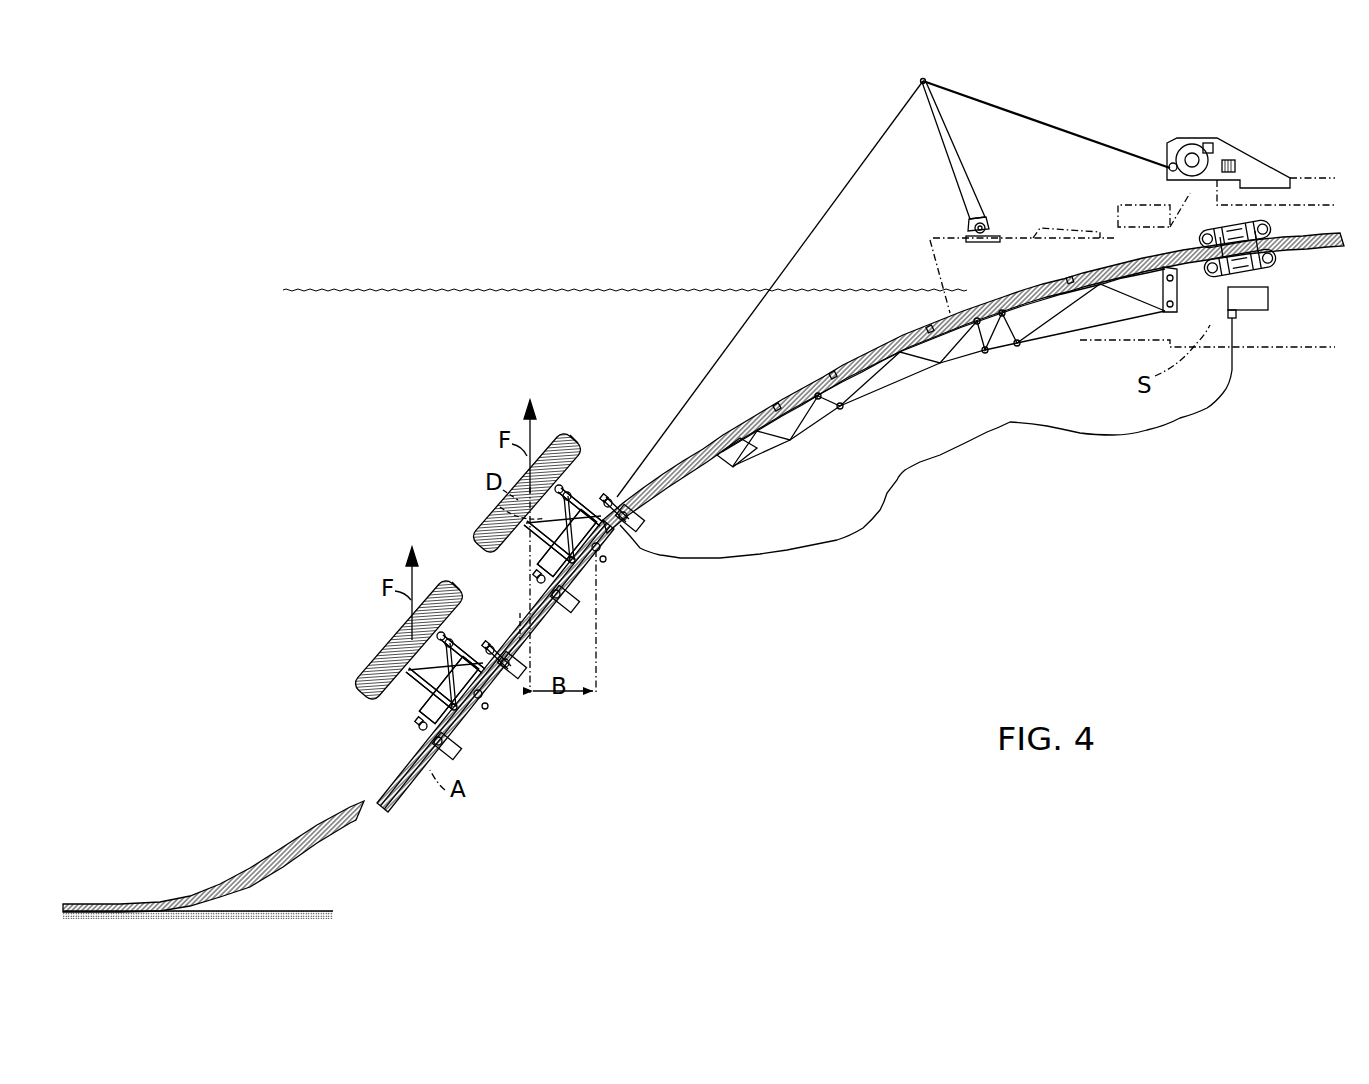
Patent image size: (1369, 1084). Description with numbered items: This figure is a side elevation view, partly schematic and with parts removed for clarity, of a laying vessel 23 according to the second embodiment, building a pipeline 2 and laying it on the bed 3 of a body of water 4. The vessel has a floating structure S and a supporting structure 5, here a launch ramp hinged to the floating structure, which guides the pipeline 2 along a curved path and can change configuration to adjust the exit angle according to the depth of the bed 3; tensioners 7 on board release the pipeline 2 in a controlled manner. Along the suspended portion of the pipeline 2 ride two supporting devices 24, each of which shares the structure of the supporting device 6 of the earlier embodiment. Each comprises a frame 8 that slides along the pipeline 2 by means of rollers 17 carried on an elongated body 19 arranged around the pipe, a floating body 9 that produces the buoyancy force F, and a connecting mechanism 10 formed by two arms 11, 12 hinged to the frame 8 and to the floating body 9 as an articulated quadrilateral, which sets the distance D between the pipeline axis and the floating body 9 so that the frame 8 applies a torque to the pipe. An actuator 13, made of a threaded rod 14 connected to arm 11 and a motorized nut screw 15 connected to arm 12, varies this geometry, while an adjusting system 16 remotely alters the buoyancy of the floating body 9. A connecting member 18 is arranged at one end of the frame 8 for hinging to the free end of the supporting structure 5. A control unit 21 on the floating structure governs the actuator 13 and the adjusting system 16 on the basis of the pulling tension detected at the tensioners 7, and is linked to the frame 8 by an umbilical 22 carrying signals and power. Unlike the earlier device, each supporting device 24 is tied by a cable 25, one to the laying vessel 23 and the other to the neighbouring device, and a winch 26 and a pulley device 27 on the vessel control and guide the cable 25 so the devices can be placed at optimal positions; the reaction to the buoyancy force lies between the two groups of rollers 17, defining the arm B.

The pipeline 2 is at (298, 851).
The bed 3 is at (300, 911).
The body of water 4 is at (636, 308).
The supporting structure 5 is at (1001, 362).
The supporting device 6 is at (468, 612).
The tensioners 7 is at (1288, 222).
The frame 8 is at (432, 707).
The floating body 9 is at (377, 668).
The connecting mechanism 10 is at (412, 714).
The arm 11 is at (408, 677).
The arm 12 is at (477, 695).
The actuator 13 is at (487, 622).
The threaded rod 14 is at (448, 676).
The motorized nut screw 15 is at (446, 639).
The adjusting system 16 is at (458, 586).
The rollers 17 is at (490, 660).
The connecting member 18 is at (498, 640).
The elongated body 19 is at (481, 702).
The control unit 21 is at (1273, 297).
The umbilical 22 is at (1205, 412).
The laying vessel 23 is at (1290, 130).
The supporting device 24 is at (438, 561).
The cable 25 is at (822, 221).
The winch 26 is at (1248, 146).
The pulley device 27 is at (912, 80).